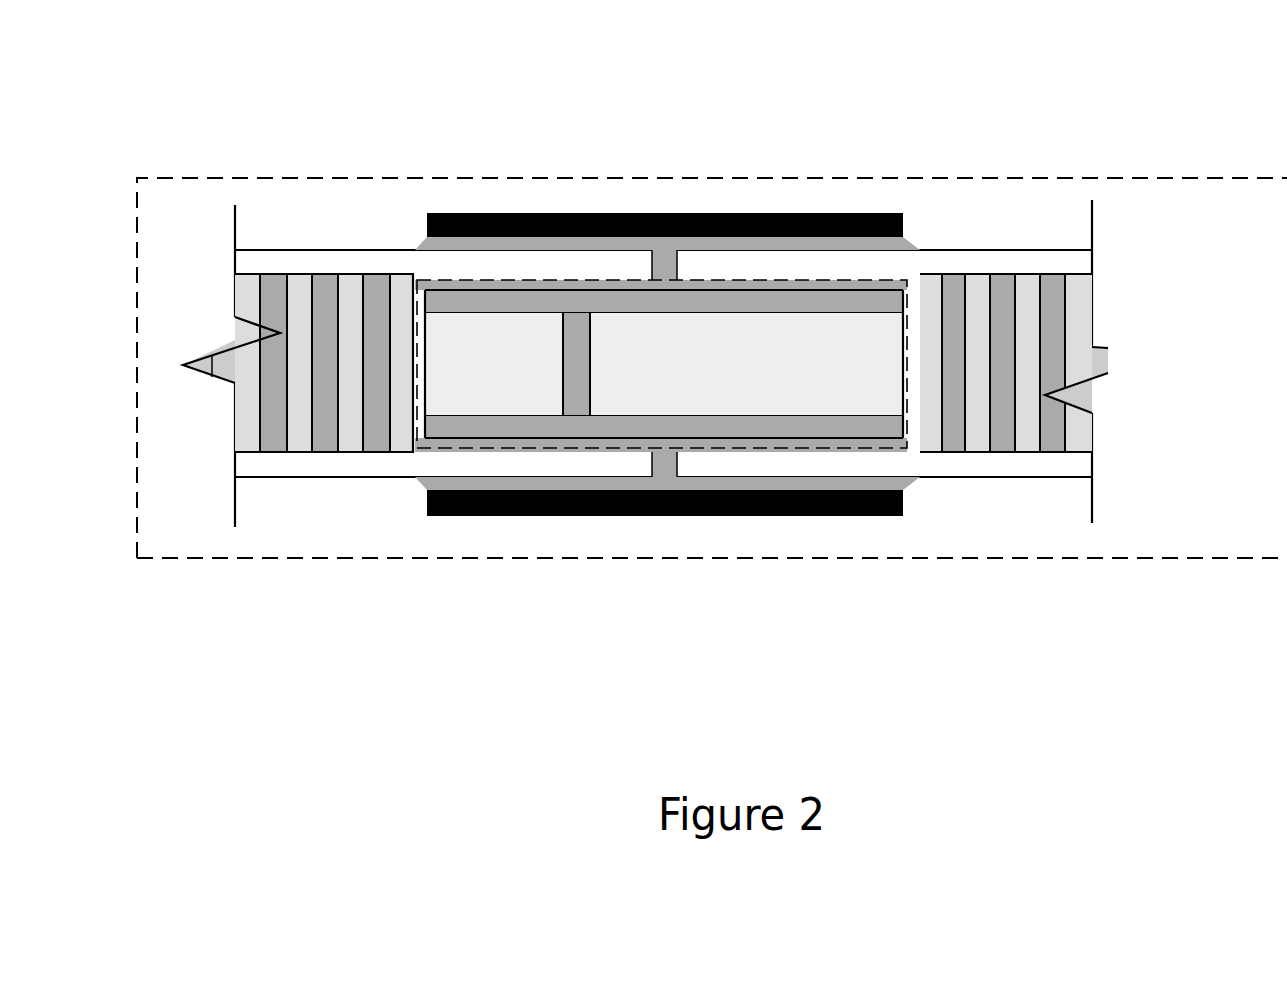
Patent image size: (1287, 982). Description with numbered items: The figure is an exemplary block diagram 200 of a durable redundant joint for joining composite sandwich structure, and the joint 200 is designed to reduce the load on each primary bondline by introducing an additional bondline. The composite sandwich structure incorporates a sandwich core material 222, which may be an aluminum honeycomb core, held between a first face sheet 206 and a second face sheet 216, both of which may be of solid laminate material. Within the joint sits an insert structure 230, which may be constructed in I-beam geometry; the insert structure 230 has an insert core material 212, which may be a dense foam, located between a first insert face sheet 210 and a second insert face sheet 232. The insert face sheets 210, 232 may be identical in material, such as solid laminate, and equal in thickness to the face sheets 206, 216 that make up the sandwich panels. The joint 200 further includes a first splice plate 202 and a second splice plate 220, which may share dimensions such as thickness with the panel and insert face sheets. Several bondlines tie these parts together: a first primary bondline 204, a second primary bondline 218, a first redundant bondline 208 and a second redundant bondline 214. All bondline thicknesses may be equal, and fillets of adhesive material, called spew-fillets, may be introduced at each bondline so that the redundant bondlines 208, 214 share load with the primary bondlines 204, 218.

The block diagram 200 is at (712, 296).
The first splice plate 202 is at (845, 205).
The first primary bondline 204 is at (915, 240).
The first face sheet 206 is at (1003, 240).
The first redundant bondline 208 is at (907, 292).
The first insert face sheet 210 is at (652, 305).
The insert core material 212 is at (513, 377).
The second redundant bondline 214 is at (423, 445).
The second face sheet 216 is at (1003, 483).
The second primary bondline 218 is at (917, 502).
The second splice plate 220 is at (828, 518).
The sandwich core material 222 is at (300, 427).
The insert structure 230 is at (415, 277).
The second insert face sheet 232 is at (670, 430).